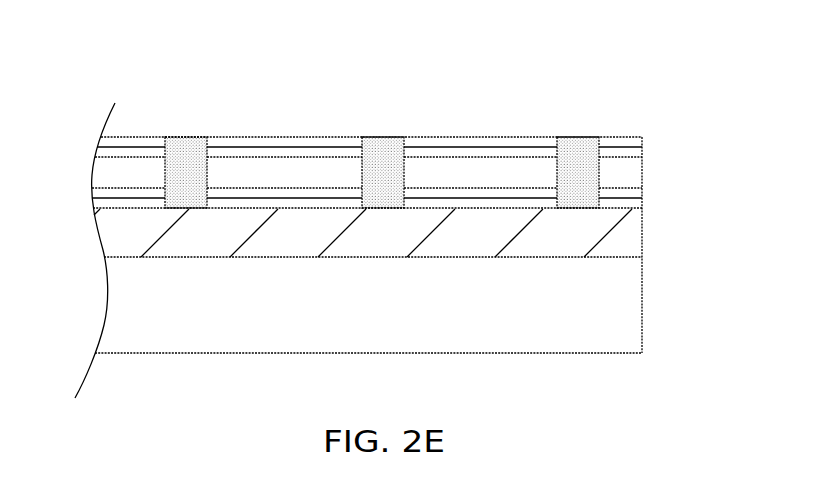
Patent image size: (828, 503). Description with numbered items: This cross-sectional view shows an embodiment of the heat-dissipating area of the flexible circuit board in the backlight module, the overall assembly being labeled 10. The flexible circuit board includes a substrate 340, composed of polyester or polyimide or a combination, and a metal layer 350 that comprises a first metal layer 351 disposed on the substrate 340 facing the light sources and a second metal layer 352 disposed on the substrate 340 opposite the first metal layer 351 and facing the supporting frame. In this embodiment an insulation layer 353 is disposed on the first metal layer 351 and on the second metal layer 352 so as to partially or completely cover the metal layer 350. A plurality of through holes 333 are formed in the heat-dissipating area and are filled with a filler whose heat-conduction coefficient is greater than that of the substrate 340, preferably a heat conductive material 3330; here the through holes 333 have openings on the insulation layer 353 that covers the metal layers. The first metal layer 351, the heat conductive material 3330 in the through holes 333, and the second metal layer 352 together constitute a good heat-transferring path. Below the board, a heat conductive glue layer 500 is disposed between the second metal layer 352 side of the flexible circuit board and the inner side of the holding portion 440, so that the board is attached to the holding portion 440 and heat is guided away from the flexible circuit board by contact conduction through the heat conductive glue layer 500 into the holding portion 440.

The display panel 10 is at (115, 43).
The substrate 340 is at (112, 168).
The heat conductive material 3330 is at (370, 170).
The through holes 333 is at (578, 128).
The first metal layer 351 is at (635, 152).
The second metal layer 352 is at (635, 193).
The metal layer 350 is at (714, 143).
The insulation layer 353 is at (105, 140).
The heat conductive glue layer 500 is at (115, 230).
The holding portion 440 is at (631, 317).